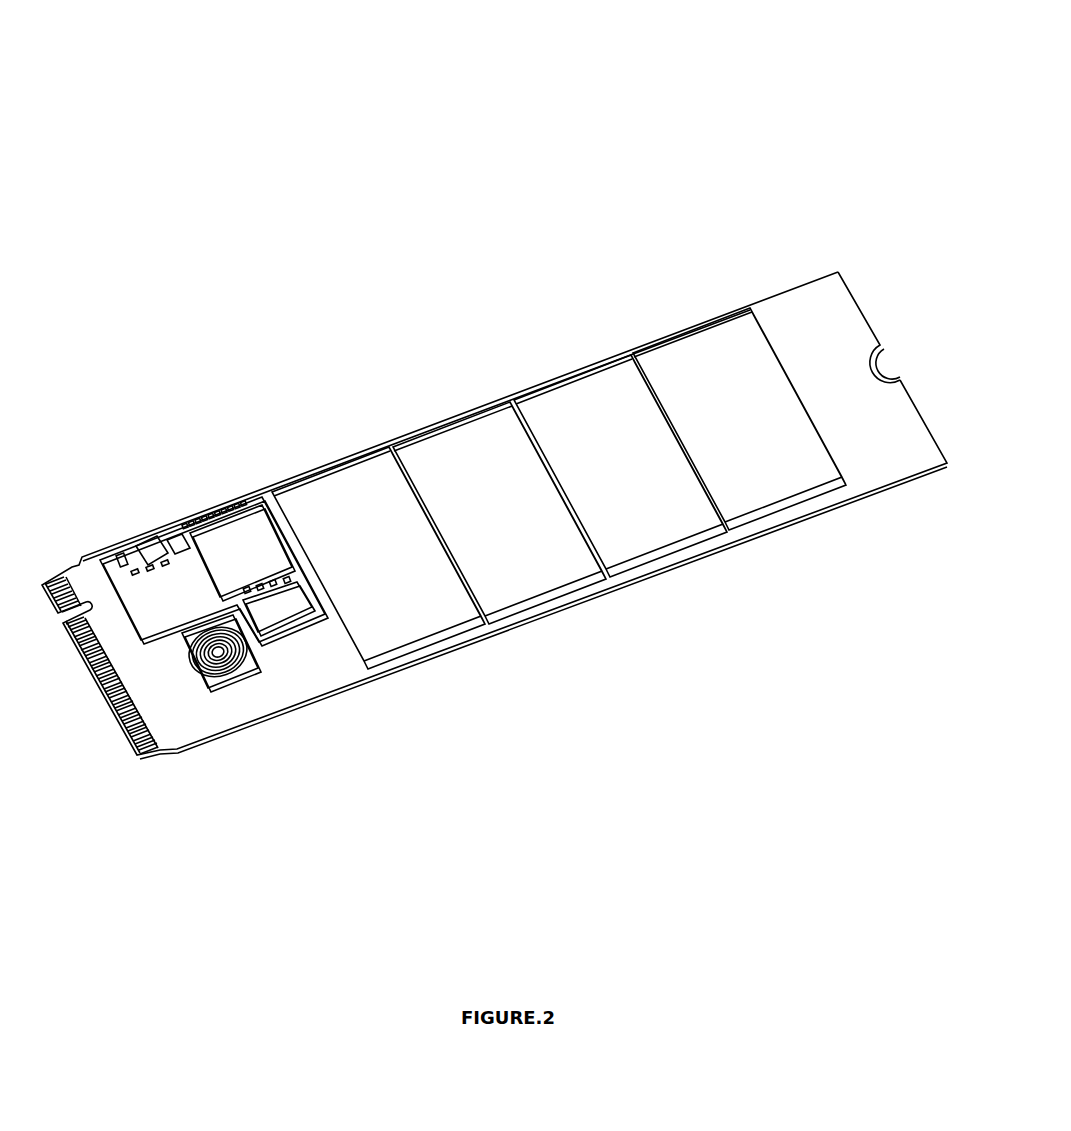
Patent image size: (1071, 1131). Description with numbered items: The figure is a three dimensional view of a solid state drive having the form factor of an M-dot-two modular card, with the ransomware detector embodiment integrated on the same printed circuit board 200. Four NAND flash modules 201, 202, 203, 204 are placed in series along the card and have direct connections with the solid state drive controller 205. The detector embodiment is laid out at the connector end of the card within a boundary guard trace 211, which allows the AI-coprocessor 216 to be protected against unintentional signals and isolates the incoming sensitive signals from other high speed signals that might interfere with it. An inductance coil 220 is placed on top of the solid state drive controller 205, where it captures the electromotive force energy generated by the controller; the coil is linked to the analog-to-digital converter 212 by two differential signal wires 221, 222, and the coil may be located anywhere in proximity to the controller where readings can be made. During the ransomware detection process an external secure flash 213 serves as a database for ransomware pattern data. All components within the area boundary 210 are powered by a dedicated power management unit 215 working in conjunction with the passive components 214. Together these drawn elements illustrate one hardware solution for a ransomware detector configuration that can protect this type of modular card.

The printed circuit board 200 is at (842, 302).
The NAND flash module 201 is at (717, 372).
The NAND flash module 202 is at (588, 428).
The NAND flash module 203 is at (470, 490).
The NAND flash module 204 is at (352, 537).
The solid state drive controller 205 is at (202, 613).
The area boundary 210 is at (132, 590).
The boundary guard trace 211 is at (325, 615).
The analog-to-digital converter 212 is at (177, 608).
The external secure flash 213 is at (272, 608).
The passive components 214 is at (176, 542).
The power management unit 215 is at (155, 545).
The AI-coprocessor 216 is at (252, 527).
The inductance coil 220 is at (233, 650).
The differential signal wire 221 is at (191, 619).
The differential signal wire 222 is at (137, 756).